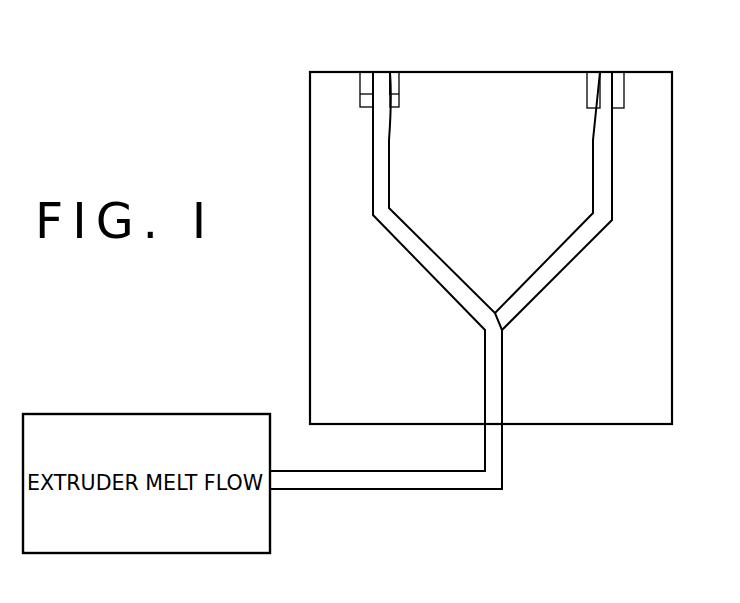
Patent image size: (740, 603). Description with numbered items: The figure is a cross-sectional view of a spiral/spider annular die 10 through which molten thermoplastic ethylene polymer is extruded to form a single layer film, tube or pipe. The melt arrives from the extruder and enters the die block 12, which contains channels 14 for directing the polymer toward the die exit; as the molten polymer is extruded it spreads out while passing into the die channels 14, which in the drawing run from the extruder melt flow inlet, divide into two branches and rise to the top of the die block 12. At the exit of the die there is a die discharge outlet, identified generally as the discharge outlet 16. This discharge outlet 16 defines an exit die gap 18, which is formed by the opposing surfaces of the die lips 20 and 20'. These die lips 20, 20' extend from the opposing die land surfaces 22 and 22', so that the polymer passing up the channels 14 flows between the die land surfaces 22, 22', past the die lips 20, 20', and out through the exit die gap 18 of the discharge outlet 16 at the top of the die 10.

The spiral/spider annular die 10 is at (296, 218).
The die block 12 is at (310, 318).
The channels 14 is at (543, 283).
The die discharge outlet 16 is at (376, 64).
The exit die gap 18 is at (384, 72).
The die lip 20 is at (345, 66).
The die lip 20' is at (414, 66).
The die land surface 22 is at (345, 114).
The die land surface 22' is at (422, 98).